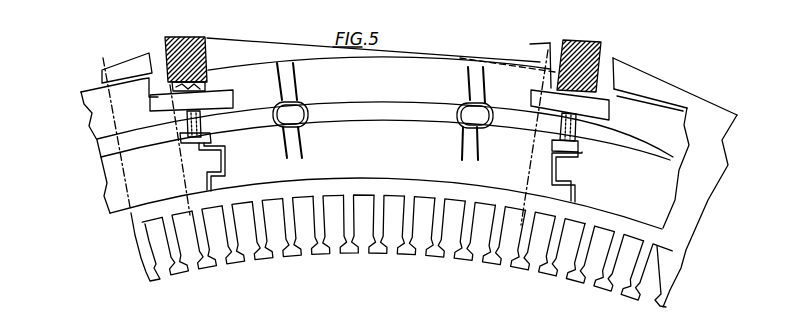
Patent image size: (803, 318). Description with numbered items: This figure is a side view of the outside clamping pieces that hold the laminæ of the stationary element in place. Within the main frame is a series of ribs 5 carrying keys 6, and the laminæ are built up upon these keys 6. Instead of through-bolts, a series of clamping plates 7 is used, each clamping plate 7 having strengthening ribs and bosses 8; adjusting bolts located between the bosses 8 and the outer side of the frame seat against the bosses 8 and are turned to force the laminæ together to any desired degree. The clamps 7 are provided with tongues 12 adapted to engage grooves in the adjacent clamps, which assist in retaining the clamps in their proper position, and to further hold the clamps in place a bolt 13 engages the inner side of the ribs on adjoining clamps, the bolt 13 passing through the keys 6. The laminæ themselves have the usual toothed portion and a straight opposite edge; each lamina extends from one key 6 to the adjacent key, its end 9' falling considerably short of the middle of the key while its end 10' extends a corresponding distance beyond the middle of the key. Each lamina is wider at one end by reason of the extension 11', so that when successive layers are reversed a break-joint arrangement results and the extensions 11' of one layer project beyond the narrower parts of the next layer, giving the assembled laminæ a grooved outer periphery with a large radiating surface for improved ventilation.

The ribs 5 is at (165, 47).
The keys 6 is at (215, 88).
The clamping plates 7 is at (385, 108).
The bosses 8 is at (292, 110).
The end of lamina 9' is at (267, 188).
The end of lamina 10' is at (534, 182).
The extension 11' is at (396, 60).
The tongues 12 is at (389, 172).
The bolt 13 is at (193, 145).